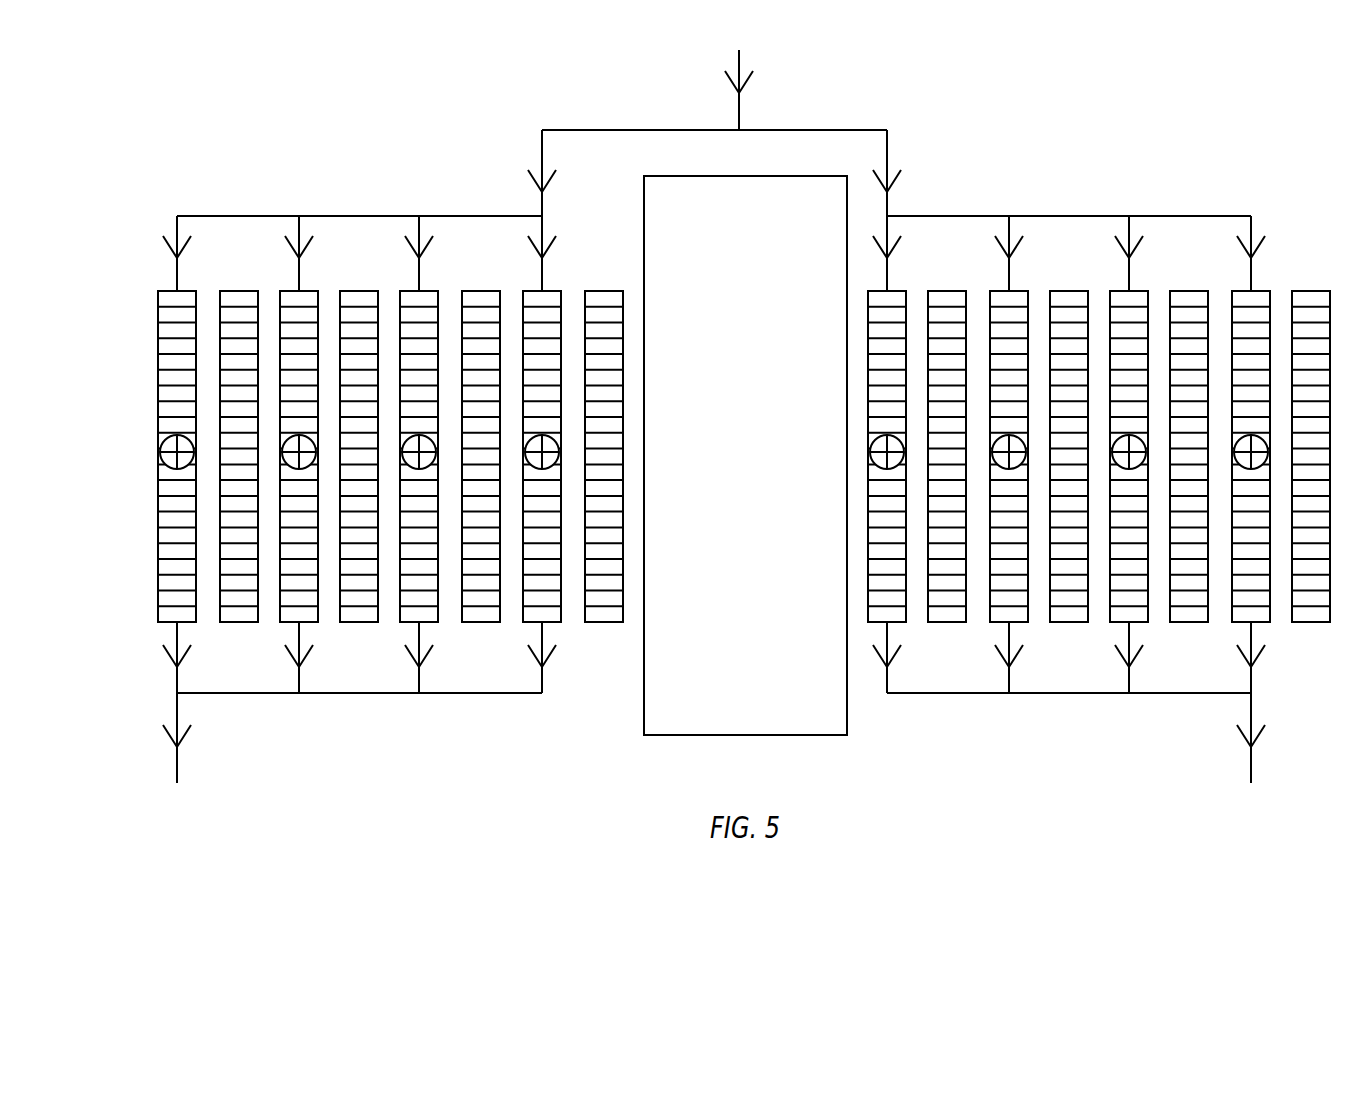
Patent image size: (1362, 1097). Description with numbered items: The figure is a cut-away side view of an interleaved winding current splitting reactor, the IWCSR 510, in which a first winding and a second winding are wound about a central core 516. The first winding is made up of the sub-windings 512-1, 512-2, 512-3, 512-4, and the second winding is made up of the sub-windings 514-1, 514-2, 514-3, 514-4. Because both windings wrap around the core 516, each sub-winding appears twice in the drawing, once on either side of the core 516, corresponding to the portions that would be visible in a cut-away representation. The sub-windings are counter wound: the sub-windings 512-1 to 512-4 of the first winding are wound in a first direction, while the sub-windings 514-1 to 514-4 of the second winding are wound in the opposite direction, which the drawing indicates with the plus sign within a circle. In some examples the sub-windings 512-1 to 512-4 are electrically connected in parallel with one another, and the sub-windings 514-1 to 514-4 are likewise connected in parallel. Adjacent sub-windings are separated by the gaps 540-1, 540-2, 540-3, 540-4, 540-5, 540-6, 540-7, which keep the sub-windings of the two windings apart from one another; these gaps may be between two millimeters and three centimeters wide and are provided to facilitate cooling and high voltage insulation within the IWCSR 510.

The IWCSR 510 is at (408, 67).
The core 516 is at (761, 465).
The sub-winding 514-1 is at (562, 322).
The sub-winding 514-2 is at (412, 291).
The sub-winding 514-3 is at (292, 291).
The sub-winding 514-4 is at (170, 291).
The sub-winding 512-1 is at (600, 622).
The sub-winding 512-2 is at (480, 622).
The sub-winding 512-3 is at (355, 622).
The sub-winding 512-4 is at (235, 622).
The gap 540-1 is at (572, 620).
The gap 540-2 is at (512, 315).
The gap 540-3 is at (450, 300).
The gap 540-4 is at (388, 605).
The gap 540-5 is at (325, 320).
The gap 540-6 is at (266, 595).
The gap 540-7 is at (205, 300).